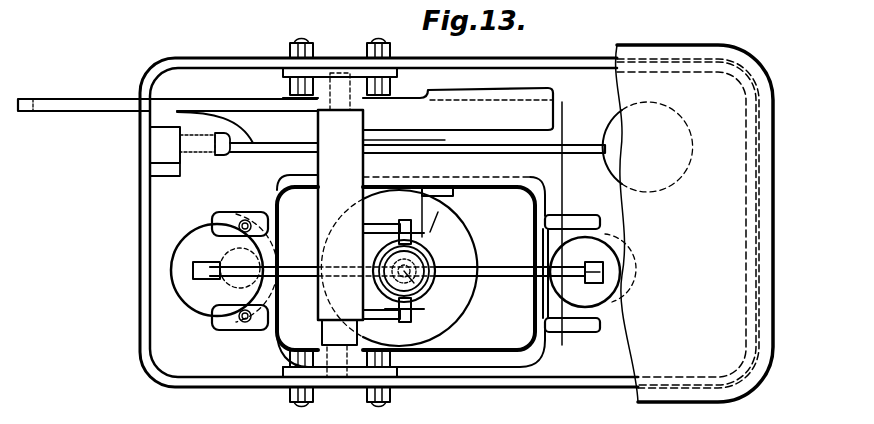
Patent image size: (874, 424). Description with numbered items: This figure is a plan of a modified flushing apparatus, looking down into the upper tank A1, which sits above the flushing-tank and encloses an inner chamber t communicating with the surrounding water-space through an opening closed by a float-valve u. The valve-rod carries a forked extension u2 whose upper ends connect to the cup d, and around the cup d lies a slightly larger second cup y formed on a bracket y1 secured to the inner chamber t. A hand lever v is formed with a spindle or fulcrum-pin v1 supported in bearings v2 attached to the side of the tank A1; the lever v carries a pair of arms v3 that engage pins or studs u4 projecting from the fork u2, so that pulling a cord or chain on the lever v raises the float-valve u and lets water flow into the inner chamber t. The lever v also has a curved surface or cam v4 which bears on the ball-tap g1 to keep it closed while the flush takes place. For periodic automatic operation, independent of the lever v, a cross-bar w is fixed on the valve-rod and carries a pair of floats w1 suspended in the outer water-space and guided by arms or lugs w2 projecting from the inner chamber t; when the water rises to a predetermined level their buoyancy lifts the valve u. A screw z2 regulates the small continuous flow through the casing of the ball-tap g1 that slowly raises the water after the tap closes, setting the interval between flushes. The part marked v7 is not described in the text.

The tank A1 is at (467, 223).
The lever v is at (117, 106).
The spindle or fulcrum-pin v1 is at (363, 100).
The bearings v2 is at (327, 92).
The arms v3 is at (392, 224).
The curved surface or cam v4 is at (244, 153).
The block v7 is at (352, 336).
The ball-tap g1 is at (190, 145).
The screw z2 is at (165, 181).
The inner chamber t is at (300, 196).
The float-valve u is at (470, 233).
The forked extension u2 is at (423, 316).
The pins or studs u4 is at (406, 272).
The second cup y is at (424, 274).
The bracket y1 is at (432, 219).
The cup d is at (430, 268).
The cross-bar w is at (287, 275).
The floats w1 is at (432, 297).
The arms or lugs w2 is at (247, 201).